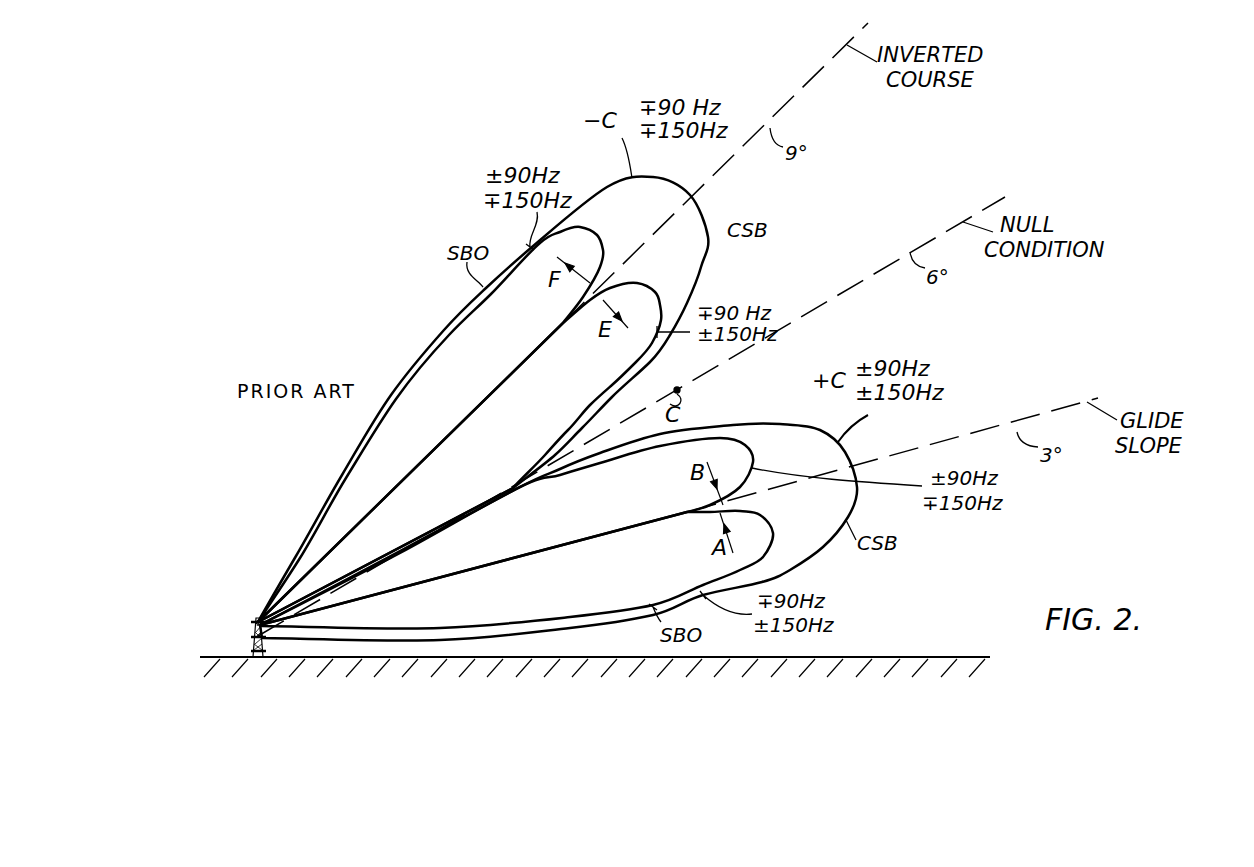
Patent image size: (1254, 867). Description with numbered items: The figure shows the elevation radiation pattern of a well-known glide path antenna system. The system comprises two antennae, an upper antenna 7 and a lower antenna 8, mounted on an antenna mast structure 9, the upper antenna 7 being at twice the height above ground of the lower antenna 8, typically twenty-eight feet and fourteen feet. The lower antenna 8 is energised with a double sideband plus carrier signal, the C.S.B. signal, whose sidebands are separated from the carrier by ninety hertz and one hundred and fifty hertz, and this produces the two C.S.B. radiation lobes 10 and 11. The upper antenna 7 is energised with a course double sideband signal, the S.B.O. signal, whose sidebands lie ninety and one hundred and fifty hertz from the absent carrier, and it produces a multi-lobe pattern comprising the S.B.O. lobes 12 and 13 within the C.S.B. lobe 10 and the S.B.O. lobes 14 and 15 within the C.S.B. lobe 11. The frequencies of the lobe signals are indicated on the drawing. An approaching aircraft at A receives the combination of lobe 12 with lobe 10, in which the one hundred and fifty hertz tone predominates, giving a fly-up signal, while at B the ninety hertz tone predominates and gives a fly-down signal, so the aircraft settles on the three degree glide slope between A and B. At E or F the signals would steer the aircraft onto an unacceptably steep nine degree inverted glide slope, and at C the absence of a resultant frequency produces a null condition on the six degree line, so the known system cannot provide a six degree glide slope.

The upper antenna 7 is at (259, 622).
The lower antenna 8 is at (258, 637).
The antenna mast structure 9 is at (257, 651).
The C.S.B. radiation lobe 10 is at (810, 550).
The C.S.B. radiation lobe 11 is at (701, 276).
The S.B.O. lobe 12 is at (773, 538).
The S.B.O. lobe 13 is at (750, 452).
The S.B.O. lobe 14 is at (660, 294).
The S.B.O. lobe 15 is at (587, 227).